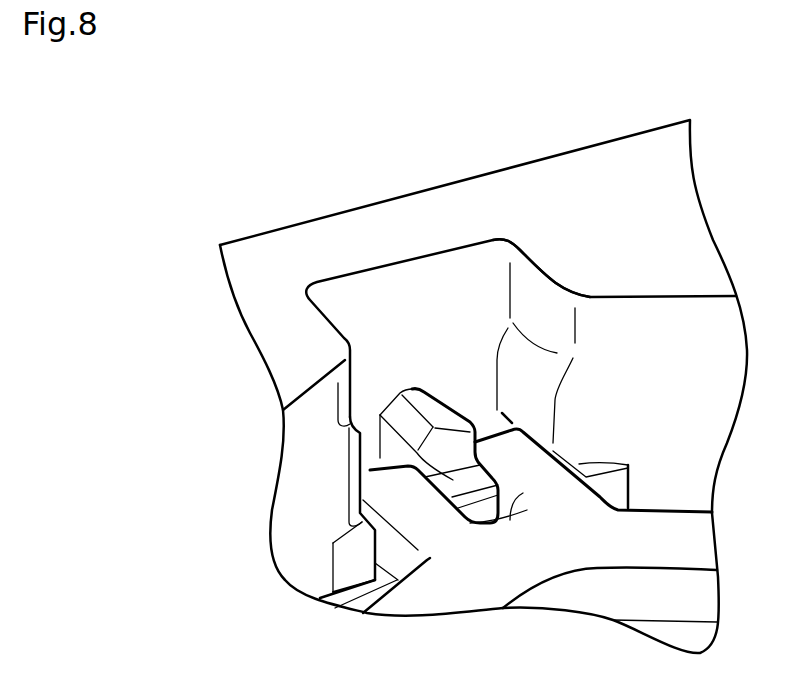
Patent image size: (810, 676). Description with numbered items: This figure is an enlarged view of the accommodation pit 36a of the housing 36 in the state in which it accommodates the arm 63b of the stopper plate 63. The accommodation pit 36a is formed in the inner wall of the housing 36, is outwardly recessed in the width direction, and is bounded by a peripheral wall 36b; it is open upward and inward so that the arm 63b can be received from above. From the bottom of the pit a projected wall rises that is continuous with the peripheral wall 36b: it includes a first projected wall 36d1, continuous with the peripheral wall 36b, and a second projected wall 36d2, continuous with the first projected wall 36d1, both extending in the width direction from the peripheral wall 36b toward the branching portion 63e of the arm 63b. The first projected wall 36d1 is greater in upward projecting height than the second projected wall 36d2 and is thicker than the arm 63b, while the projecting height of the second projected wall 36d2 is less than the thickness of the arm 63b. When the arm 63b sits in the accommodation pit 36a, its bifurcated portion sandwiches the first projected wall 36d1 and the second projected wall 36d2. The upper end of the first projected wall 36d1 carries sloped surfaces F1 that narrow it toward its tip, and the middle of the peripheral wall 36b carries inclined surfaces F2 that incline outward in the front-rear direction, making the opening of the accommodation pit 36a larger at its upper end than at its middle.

The housing 36 is at (582, 171).
The accommodation pit 36a is at (413, 288).
The peripheral wall 36b is at (500, 263).
The first projected wall 36d1 is at (414, 392).
The second projected wall 36d2 is at (393, 507).
The stopper plate 63 is at (710, 545).
The arm 63b is at (403, 464).
The branching portion 63e is at (518, 495).
The sloped surfaces F1 is at (397, 394).
The inclined surfaces F2 is at (350, 424).